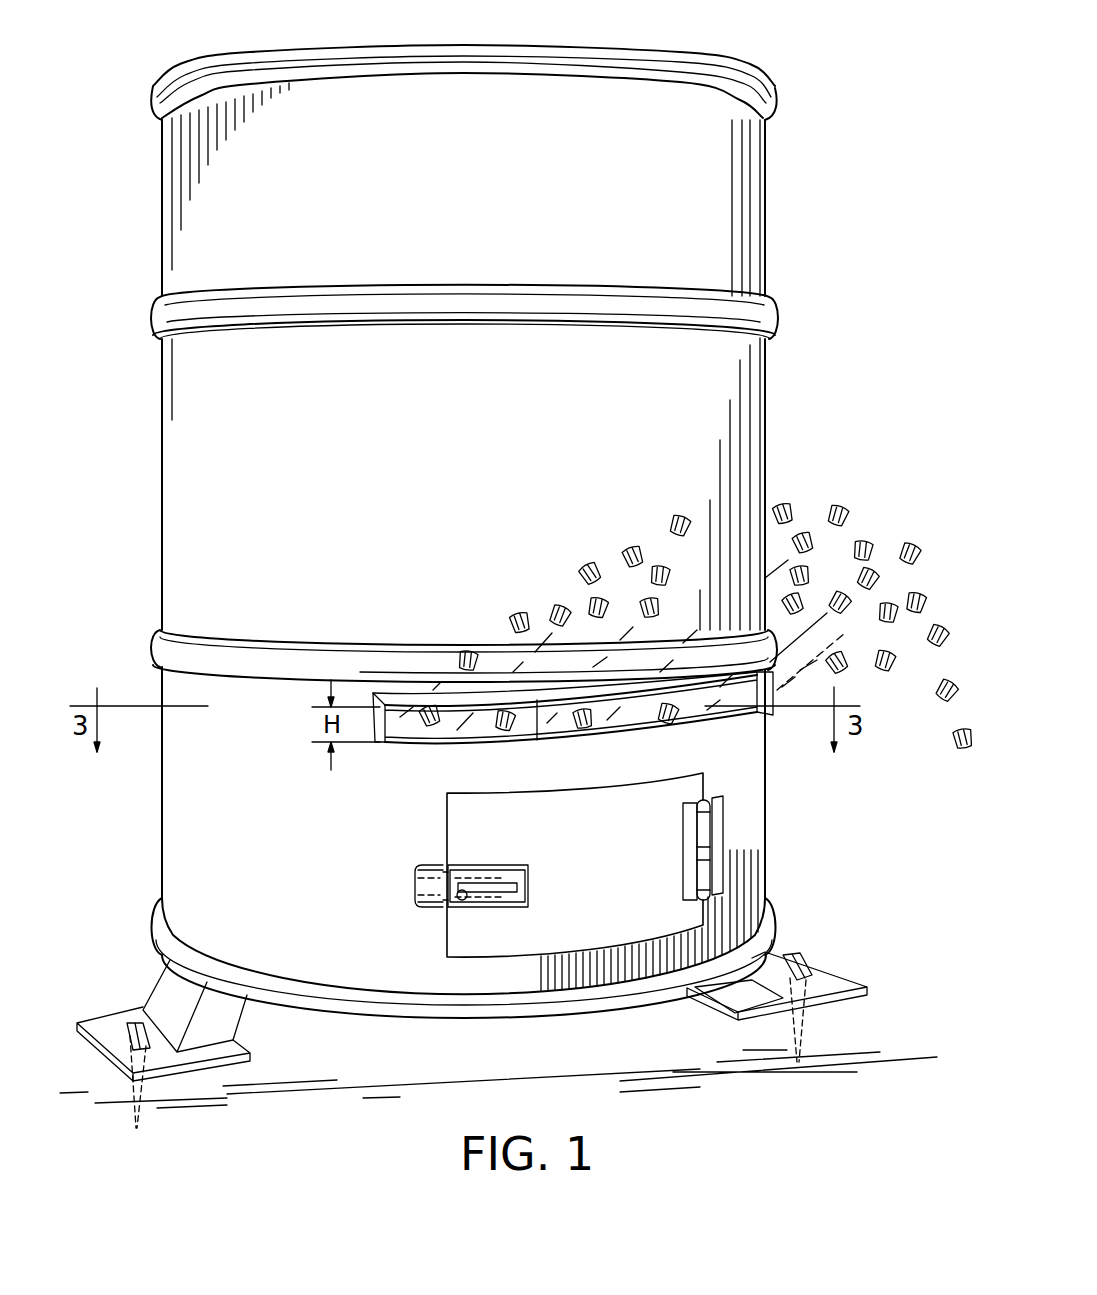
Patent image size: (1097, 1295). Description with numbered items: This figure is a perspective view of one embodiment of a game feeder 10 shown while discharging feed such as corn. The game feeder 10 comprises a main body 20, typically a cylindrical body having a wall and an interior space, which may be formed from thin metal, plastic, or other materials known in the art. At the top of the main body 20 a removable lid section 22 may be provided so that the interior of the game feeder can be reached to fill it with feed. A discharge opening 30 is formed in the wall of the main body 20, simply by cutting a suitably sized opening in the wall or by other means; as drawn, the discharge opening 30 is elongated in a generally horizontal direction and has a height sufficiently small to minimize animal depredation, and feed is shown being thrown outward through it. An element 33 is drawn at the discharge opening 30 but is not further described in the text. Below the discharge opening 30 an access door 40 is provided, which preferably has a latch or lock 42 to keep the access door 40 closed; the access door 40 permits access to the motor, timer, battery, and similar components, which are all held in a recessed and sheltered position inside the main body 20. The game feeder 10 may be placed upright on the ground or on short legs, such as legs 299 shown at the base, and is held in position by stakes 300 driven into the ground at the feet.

The game feeder 10 is at (122, 172).
The main body 20 is at (717, 207).
The removable lid section 22 is at (742, 78).
The discharge opening 30 is at (413, 735).
The slot opening 33 is at (400, 693).
The access door 40 is at (614, 884).
The latch or lock 42 is at (483, 888).
The support leg 299 is at (222, 1018).
The stakes 300 is at (140, 1023).